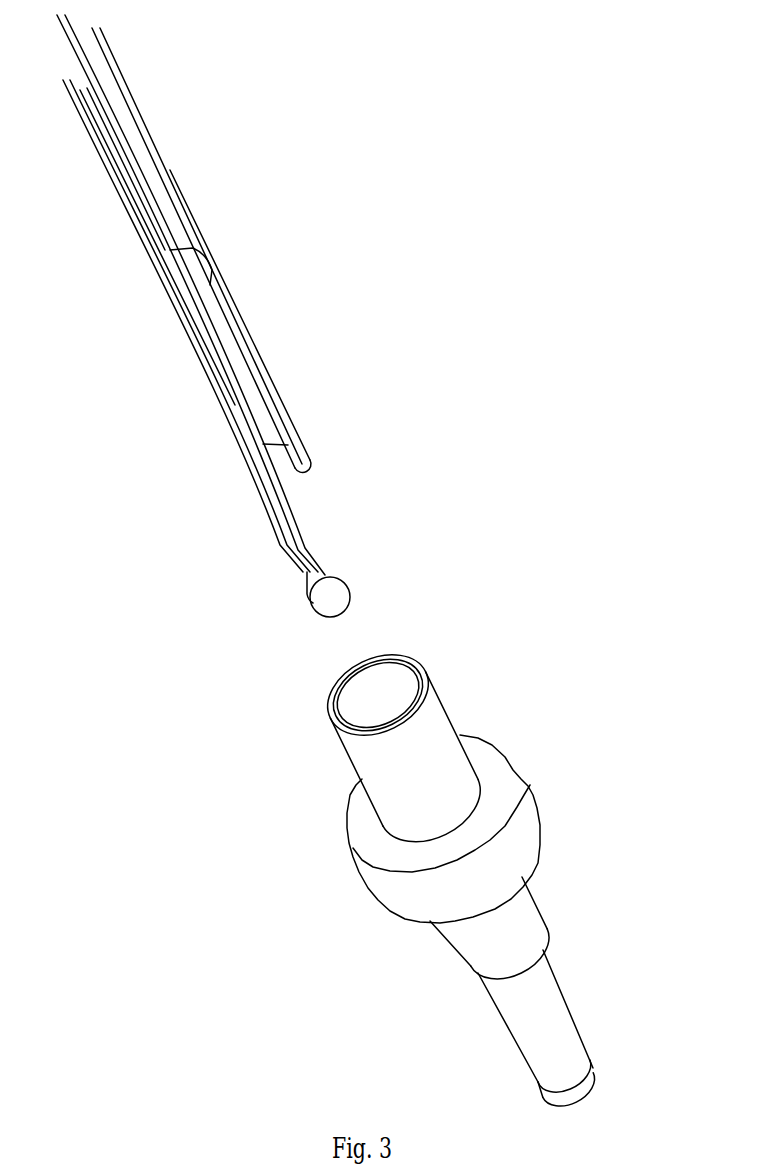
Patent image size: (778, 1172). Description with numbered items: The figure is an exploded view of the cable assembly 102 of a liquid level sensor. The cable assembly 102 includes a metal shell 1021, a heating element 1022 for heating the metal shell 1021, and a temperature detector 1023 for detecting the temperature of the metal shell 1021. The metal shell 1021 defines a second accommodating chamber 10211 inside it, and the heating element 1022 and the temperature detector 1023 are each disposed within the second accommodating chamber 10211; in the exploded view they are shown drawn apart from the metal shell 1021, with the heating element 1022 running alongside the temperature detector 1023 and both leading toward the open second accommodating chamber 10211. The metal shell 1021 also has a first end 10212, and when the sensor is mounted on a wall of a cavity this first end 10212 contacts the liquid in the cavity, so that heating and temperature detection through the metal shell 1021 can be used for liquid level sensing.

The cable assembly 102 is at (255, 255).
The heating element 1022 is at (258, 375).
The temperature detector 1023 is at (313, 593).
The metal shell 1021 is at (368, 833).
The second accommodating chamber 10211 is at (380, 693).
The first end 10212 is at (578, 1087).